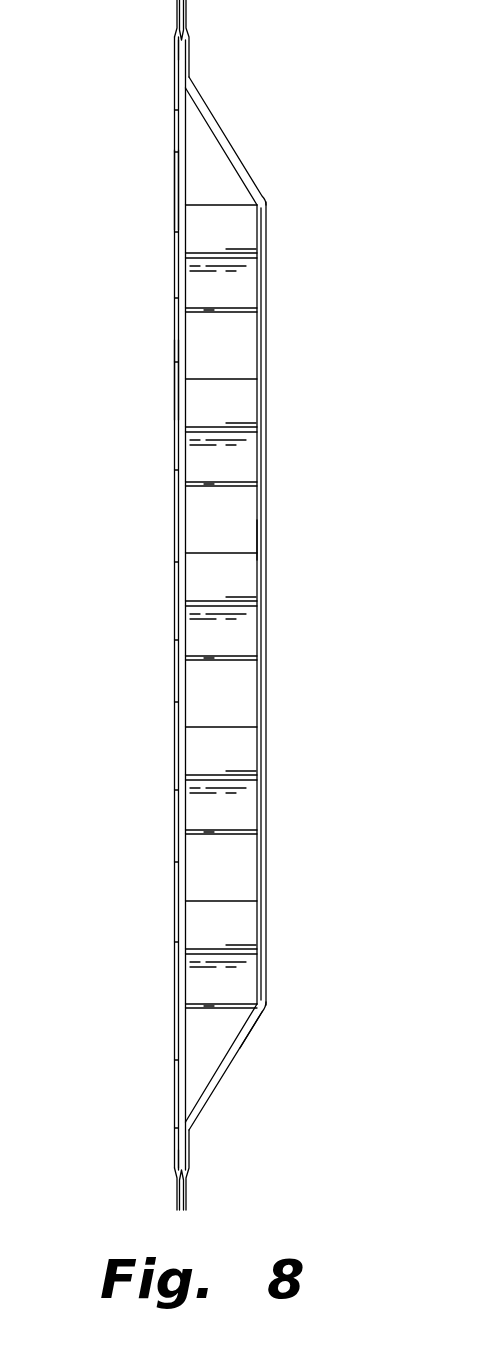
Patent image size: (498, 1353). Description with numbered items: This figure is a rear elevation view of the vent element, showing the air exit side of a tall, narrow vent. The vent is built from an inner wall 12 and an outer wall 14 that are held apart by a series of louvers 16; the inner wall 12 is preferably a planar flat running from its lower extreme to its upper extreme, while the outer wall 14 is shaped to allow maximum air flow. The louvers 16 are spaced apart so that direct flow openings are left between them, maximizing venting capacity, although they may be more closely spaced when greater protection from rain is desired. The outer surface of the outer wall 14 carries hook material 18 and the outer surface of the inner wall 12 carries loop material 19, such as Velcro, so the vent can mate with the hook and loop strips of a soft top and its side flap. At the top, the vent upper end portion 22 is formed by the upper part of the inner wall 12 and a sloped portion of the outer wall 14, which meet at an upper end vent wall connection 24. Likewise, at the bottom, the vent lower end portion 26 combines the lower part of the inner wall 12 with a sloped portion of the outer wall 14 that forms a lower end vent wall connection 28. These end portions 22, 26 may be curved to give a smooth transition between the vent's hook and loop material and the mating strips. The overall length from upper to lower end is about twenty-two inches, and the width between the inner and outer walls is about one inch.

The inner wall 12 is at (186, 526).
The outer wall 14 is at (251, 543).
The louvers 16 is at (238, 293).
The hook material 18 is at (267, 364).
The loop material 19 is at (176, 377).
The vent upper end portion 22 is at (182, 196).
The upper end vent wall connection 24 is at (182, 75).
The vent lower end portion 26 is at (242, 1046).
The lower end vent wall connection 28 is at (197, 1162).